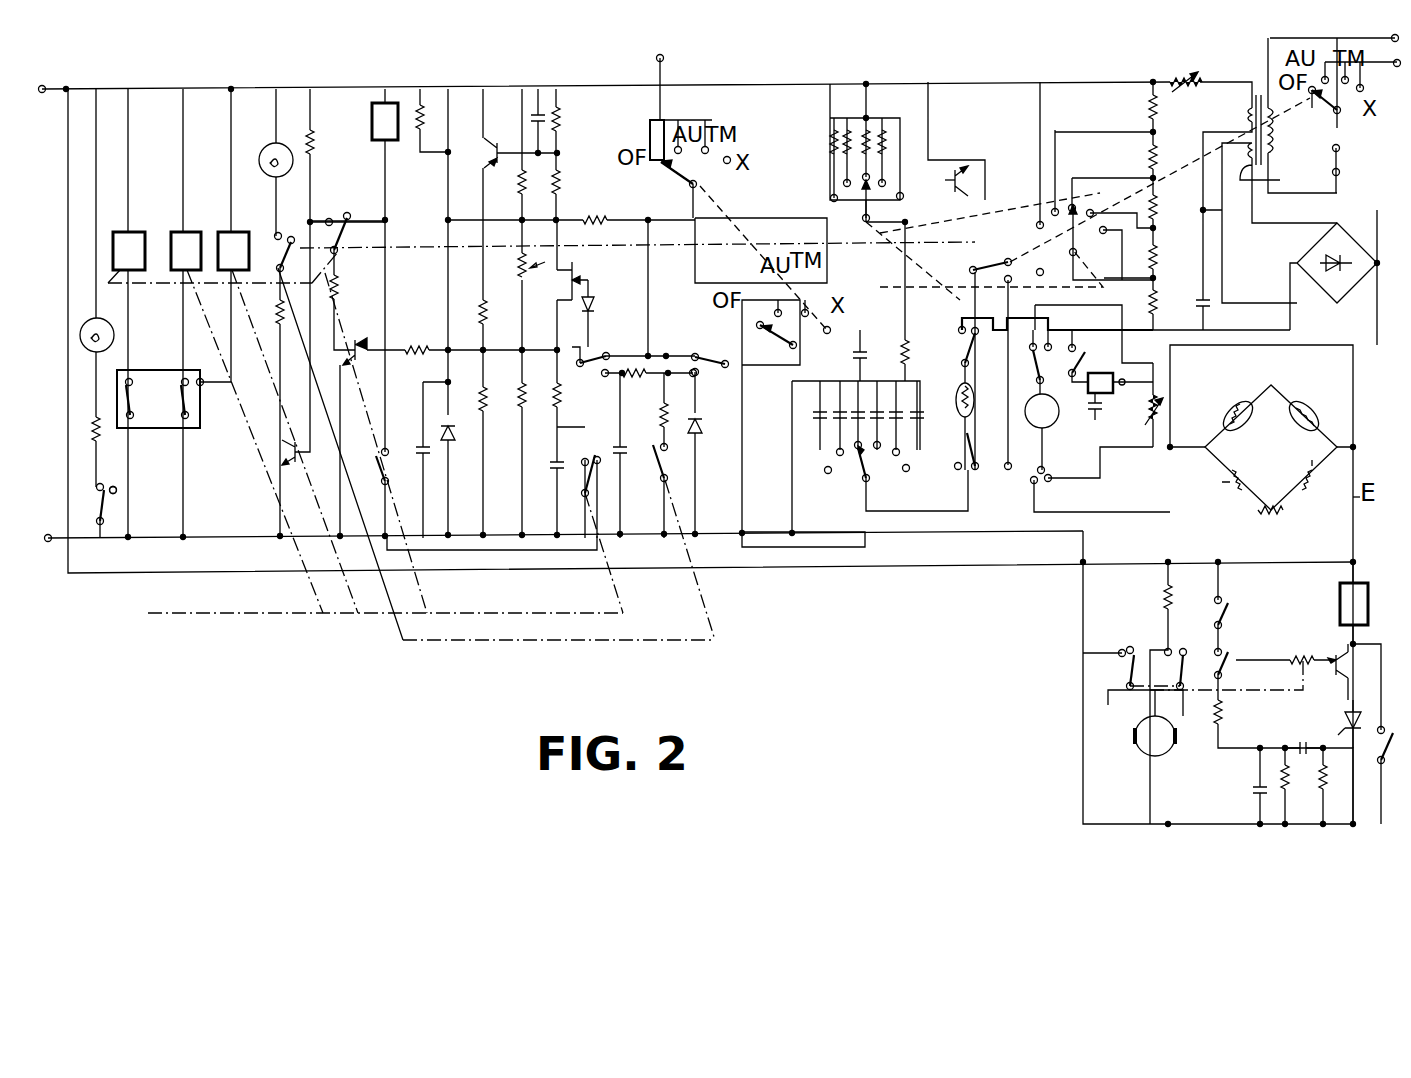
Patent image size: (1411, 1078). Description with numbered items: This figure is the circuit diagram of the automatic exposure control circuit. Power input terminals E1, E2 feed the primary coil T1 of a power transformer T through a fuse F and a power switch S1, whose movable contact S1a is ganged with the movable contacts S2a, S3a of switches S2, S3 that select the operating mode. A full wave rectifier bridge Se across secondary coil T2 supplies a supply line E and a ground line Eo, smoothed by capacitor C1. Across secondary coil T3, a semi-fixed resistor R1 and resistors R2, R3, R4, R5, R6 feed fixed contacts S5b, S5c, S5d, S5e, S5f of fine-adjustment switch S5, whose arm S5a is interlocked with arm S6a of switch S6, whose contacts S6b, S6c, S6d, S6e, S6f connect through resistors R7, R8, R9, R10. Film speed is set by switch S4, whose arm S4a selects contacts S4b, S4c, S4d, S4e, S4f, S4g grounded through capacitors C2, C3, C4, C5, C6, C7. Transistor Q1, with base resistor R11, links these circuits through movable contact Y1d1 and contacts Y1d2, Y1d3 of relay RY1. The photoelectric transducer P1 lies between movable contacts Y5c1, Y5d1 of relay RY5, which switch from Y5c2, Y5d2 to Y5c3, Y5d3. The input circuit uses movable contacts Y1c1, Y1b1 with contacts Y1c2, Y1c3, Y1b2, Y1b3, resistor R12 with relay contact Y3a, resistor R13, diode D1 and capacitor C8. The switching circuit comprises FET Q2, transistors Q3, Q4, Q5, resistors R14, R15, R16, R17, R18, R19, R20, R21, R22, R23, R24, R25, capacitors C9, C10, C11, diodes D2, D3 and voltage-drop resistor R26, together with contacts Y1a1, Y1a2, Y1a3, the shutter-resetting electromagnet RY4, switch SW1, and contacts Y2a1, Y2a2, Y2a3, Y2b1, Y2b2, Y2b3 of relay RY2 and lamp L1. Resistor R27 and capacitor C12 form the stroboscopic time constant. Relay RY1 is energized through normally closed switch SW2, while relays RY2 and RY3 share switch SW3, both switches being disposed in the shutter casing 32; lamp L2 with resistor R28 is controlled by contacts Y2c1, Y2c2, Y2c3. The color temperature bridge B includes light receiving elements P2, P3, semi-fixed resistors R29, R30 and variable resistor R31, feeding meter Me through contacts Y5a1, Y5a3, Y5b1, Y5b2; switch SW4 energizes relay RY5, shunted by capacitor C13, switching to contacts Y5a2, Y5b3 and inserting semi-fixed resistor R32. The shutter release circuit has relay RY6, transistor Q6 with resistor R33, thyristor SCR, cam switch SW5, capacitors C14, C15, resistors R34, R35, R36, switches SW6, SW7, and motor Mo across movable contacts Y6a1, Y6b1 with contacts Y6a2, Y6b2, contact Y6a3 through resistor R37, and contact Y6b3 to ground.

The lamp L1 is at (269, 158).
The lamp L2 is at (82, 328).
The relay coil RY1 is at (128, 232).
The relay coil RY2 is at (185, 232).
The relay coil RY3 is at (232, 232).
The electromagnet RY4 is at (362, 121).
The relay coil RY5 is at (1105, 393).
The relay coil RY6 is at (1340, 590).
The semi-fixed resistor R1 is at (1183, 69).
The resistor R2 is at (1169, 111).
The resistor R3 is at (1169, 154).
The resistor R4 is at (1169, 205).
The resistor R5 is at (1169, 261).
The resistor R6 is at (1169, 300).
The resistor R7 is at (808, 128).
The resistor R8 is at (829, 120).
The resistor R9 is at (851, 105).
The resistor R10 is at (903, 120).
The resistor R11 is at (900, 325).
The resistor R12 is at (650, 418).
The resistor R13 is at (646, 387).
The resistor R14 is at (580, 116).
The resistor R15 is at (580, 184).
The resistor R16 is at (548, 408).
The resistor R17 is at (510, 382).
The variable resistor R18 is at (517, 266).
The resistor R19 is at (508, 188).
The resistor R20 is at (504, 321).
The resistor R21 is at (504, 410).
The resistor R22 is at (429, 333).
The resistor R23 is at (357, 290).
The resistor R24 is at (333, 148).
The resistor R25 is at (276, 325).
The voltage drop resistor R26 is at (425, 100).
The resistor R27 is at (607, 208).
The resistor R28 is at (92, 430).
The semi-fixed resistor R29 is at (1251, 465).
The semi-fixed resistor R30 is at (1303, 455).
The variable resistor R31 is at (1278, 503).
The semi-fixed resistor R32 is at (1180, 405).
The resistor R33 is at (1310, 646).
The resistor R34 is at (1214, 725).
The resistor R35 is at (1290, 790).
The resistor R36 is at (1328, 790).
The resistor R37 is at (1191, 595).
The smoothing capacitor C1 is at (1205, 312).
The capacitor C2 is at (810, 415).
The capacitor C3 is at (821, 396).
The capacitor C4 is at (830, 430).
The capacitor C5 is at (892, 381).
The capacitor C6 is at (921, 396).
The capacitor C7 is at (934, 415).
The smoothing capacitor C8 is at (636, 472).
The capacitor C9 is at (538, 110).
The capacitor C10 is at (548, 480).
The capacitor C11 is at (416, 467).
The capacitor C12 is at (846, 355).
The capacitor C13 is at (1097, 421).
The capacitor C14 is at (1294, 740).
The capacitor C15 is at (1243, 795).
The transistor Q1 is at (950, 169).
The field effect transistor Q2 is at (586, 273).
The transistor Q3 is at (502, 137).
The transistor Q4 is at (365, 426).
The transistor Q5 is at (305, 465).
The transistor Q6 is at (1355, 672).
The rectifying diode D1 is at (713, 426).
The diode D2 is at (574, 304).
The constant voltage diode D3 is at (455, 430).
The thyristor SCR is at (1345, 718).
The full wave rectifier bridge Se is at (1345, 290).
The indicating meter Me is at (1038, 430).
The electric motor Mo is at (1130, 755).
The bridge circuit B is at (1282, 397).
The photoelectric transducer element P1 is at (981, 419).
The light receiving element P2 is at (1235, 398).
The light receiving element P3 is at (1322, 392).
The power transformer T is at (1263, 100).
The primary coil T1 is at (1291, 115).
The secondary coil T2 is at (1293, 183).
The secondary coil T3 is at (1250, 112).
The normally open switch SW1 is at (375, 450).
The normally closed switch SW2 is at (133, 412).
The normally closed switch SW3 is at (183, 418).
The exposure meter switch SW4 is at (1103, 353).
The cam controlled switch SW5 is at (1385, 765).
The normally open switch SW6 is at (1255, 605).
The normally open switch SW7 is at (1256, 646).
The casing 32 is at (156, 436).
The change-over switch S1 is at (1353, 150).
The movable contact S1a is at (1314, 128).
The change-over switch S2 is at (809, 357).
The movable contact S2a is at (770, 344).
The change-over switch S3 is at (696, 180).
The movable contact S3a is at (669, 169).
The change-over switch S4 is at (866, 480).
The movable contact arm S4a is at (881, 485).
The fixed contact S4b is at (832, 473).
The fixed contact S4c is at (824, 472).
The fixed contact S4d is at (836, 454).
The fixed contact S4e is at (900, 470).
The fixed contact S4f is at (887, 450).
The fixed contact S4g is at (917, 476).
The change-over switch S5 is at (1094, 207).
The movable contact arm S5a is at (1094, 162).
The fixed contact S5b is at (1069, 143).
The fixed contact S5c is at (1079, 154).
The fixed contact S5d is at (1073, 215).
The fixed contact S5e is at (1102, 199).
The fixed contact S5f is at (1130, 249).
The change-over switch S6 is at (823, 204).
The movable contact arm S6a is at (823, 166).
The fixed contact S6b is at (807, 189).
The fixed contact S6c is at (814, 157).
The fixed contact S6d is at (866, 118).
The fixed contact S6e is at (910, 175).
The fixed contact S6f is at (918, 199).
The movable contact Y1a1 is at (364, 247).
The normally closed contact Y1a2 is at (344, 204).
The contact Y1a3 is at (349, 212).
The movable contact Y1b1 is at (570, 343).
The normally closed contact Y1b2 is at (606, 352).
The contact Y1b3 is at (599, 388).
The movable contact Y1c1 is at (700, 352).
The normally closed contact Y1c2 is at (722, 360).
The contact Y1c3 is at (723, 373).
The movable contact Y1d1 is at (980, 270).
The normally closed contact Y1d2 is at (1007, 256).
The contact Y1d3 is at (1012, 278).
The movable contact Y2a1 is at (230, 380).
The relay contact Y2a2 is at (289, 236).
The contact Y2a3 is at (276, 236).
The movable contact Y2b1 is at (600, 463).
The normally closed contact Y2b2 is at (612, 535).
The contact Y2b3 is at (583, 497).
The movable contact Y2c1 is at (104, 524).
The normally closed contact Y2c2 is at (104, 487).
The contact Y2c3 is at (116, 492).
The relay contact Y3a is at (668, 470).
The movable contact Y5a1 is at (1045, 472).
The contact Y5a2 is at (1073, 328).
The normally closed contact Y5a3 is at (1020, 520).
The movable contact Y5b1 is at (1108, 477).
The normally closed contact Y5b2 is at (1034, 482).
The contact Y5b3 is at (1068, 492).
The movable contact Y5c1 is at (952, 355).
The normally closed contact Y5c2 is at (1047, 267).
The contact Y5c3 is at (975, 330).
The movable contact Y5d1 is at (976, 475).
The normally closed contact Y5d2 is at (960, 472).
The contact Y5d3 is at (968, 472).
The movable contact Y6a1 is at (1130, 663).
The normally closed contact Y6a2 is at (1205, 575).
The contact Y6a3 is at (1168, 648).
The movable contact Y6b1 is at (1130, 688).
The normally closed contact Y6b2 is at (1183, 648).
The contact Y6b3 is at (1076, 641).
The supply line E is at (177, 88).
The power input terminal E1 is at (1384, 22).
The power input terminal E2 is at (1388, 82).
The ground line Eo is at (1202, 849).
The fuse F is at (1355, 163).